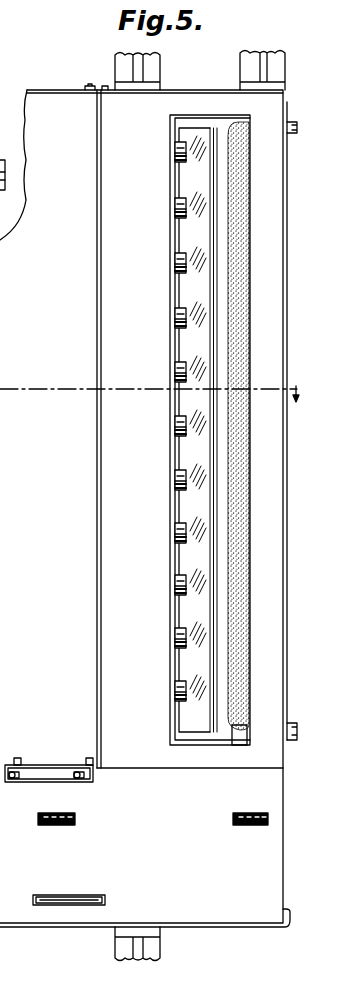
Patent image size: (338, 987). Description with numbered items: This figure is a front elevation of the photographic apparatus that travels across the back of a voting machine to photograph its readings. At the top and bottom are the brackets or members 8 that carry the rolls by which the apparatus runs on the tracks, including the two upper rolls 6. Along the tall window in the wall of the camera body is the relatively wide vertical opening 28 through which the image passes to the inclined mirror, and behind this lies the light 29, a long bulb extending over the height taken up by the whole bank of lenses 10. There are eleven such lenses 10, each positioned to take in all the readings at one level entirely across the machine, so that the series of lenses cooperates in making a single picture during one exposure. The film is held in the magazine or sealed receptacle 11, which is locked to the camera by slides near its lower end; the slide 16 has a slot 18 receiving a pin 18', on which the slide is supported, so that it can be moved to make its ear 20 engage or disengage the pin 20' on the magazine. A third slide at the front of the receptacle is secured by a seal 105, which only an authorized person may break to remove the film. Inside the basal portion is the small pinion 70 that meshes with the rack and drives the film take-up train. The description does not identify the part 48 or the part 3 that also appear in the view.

The brackets or members 8 is at (118, 62).
The lenses 10 is at (165, 190).
The vertical opening 28 is at (222, 240).
The light 29 is at (236, 447).
The upper rolls 6 is at (270, 366).
The slide 16 is at (46, 770).
The slot 18 is at (57, 792).
The pin 18' is at (57, 757).
The ear 20 is at (47, 748).
The pin 20' is at (72, 739).
The pinion 70 is at (60, 826).
The slot 48 is at (71, 897).
The seal 105 is at (14, 166).
The magazine or sealed receptacle 11 is at (8, 87).
The figure indicator 3 is at (0, 458).